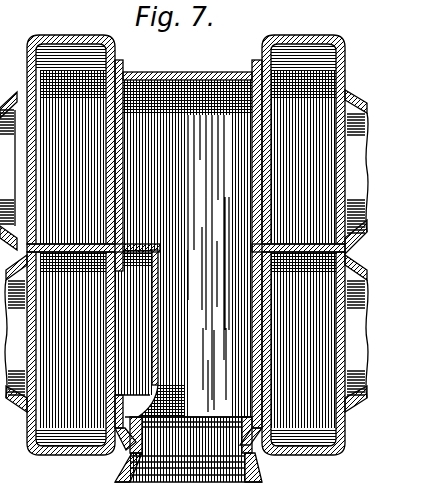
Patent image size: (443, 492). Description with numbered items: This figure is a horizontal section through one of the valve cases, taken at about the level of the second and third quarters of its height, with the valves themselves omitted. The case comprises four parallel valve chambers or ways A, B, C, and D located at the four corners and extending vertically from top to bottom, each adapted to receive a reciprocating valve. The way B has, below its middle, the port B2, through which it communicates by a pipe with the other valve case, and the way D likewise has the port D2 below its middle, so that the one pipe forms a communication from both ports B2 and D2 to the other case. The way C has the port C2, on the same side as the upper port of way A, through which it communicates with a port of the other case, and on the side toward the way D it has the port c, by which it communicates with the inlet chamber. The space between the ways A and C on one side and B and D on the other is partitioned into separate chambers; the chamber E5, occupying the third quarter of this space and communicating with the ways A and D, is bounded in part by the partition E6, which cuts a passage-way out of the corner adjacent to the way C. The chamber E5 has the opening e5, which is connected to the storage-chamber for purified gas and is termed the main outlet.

The valve chamber or way A is at (71, 139).
The valve chamber or way B is at (303, 139).
The port B2 is at (362, 172).
The valve chamber or way C is at (81, 353).
The port C2 is at (14, 333).
The valve chamber or way D is at (292, 353).
The port D2 is at (360, 333).
The chamber E5 is at (236, 185).
The partition E6 is at (157, 340).
The opening e5 is at (188, 449).
The port c is at (120, 362).